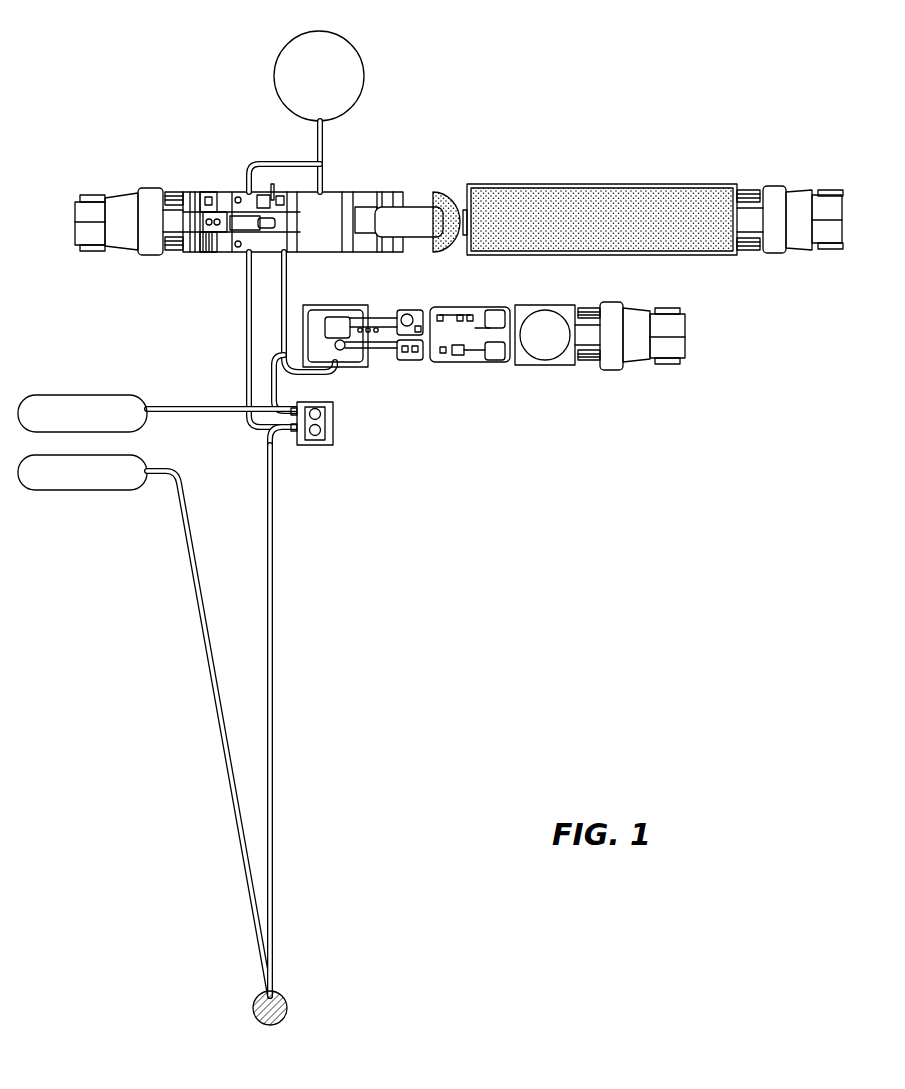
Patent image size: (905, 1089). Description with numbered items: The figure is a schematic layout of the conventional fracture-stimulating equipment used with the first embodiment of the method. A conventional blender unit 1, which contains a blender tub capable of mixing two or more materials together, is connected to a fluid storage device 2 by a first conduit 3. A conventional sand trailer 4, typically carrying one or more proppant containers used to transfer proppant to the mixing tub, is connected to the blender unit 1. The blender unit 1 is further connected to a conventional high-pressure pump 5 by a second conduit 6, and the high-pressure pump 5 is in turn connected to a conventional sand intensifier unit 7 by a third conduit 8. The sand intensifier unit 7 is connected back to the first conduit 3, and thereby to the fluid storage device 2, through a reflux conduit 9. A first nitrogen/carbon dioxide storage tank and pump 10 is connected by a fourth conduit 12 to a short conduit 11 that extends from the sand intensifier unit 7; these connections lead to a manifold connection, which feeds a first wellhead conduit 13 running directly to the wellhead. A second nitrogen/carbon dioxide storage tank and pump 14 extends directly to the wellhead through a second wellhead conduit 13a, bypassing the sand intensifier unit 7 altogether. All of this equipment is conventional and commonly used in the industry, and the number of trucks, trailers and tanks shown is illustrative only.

The blender unit 1 is at (123, 250).
The fluid storage device 2 is at (318, 34).
The first conduit 3 is at (323, 132).
The sand trailer 4 is at (567, 184).
The high-pressure pump 5 is at (522, 368).
The second conduit 6 is at (291, 300).
The sand intensifier unit 7 is at (337, 429).
The third conduit 8 is at (278, 390).
The reflux conduit 9 is at (262, 162).
The first nitrogen/carbon dioxide storage tank and pump 10 is at (63, 395).
The short conduit 11 is at (278, 437).
The fourth conduit 12 is at (193, 413).
The first wellhead conduit 13 is at (272, 683).
The second wellhead conduit 13a is at (208, 684).
The second nitrogen/carbon dioxide storage tank and pump 14 is at (62, 491).